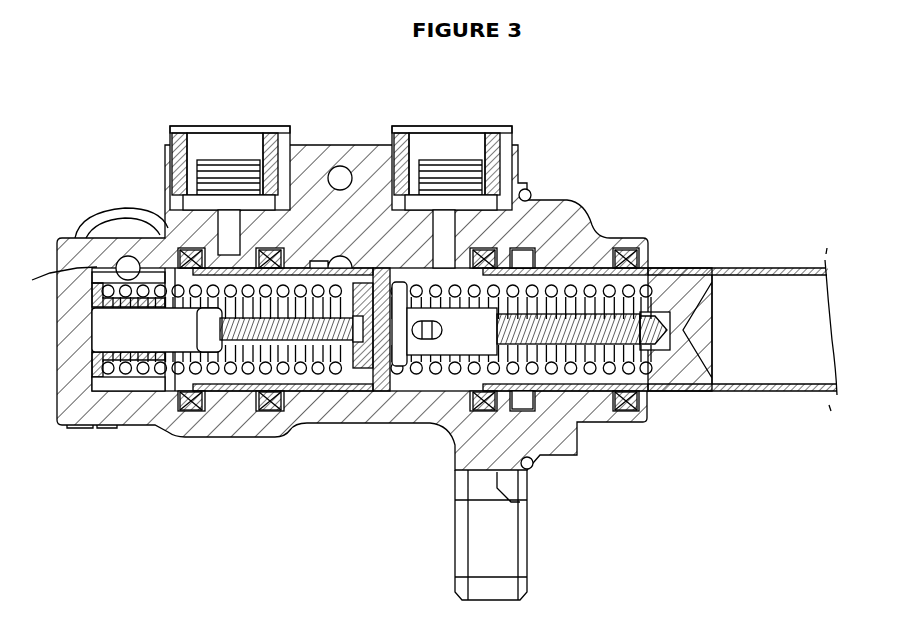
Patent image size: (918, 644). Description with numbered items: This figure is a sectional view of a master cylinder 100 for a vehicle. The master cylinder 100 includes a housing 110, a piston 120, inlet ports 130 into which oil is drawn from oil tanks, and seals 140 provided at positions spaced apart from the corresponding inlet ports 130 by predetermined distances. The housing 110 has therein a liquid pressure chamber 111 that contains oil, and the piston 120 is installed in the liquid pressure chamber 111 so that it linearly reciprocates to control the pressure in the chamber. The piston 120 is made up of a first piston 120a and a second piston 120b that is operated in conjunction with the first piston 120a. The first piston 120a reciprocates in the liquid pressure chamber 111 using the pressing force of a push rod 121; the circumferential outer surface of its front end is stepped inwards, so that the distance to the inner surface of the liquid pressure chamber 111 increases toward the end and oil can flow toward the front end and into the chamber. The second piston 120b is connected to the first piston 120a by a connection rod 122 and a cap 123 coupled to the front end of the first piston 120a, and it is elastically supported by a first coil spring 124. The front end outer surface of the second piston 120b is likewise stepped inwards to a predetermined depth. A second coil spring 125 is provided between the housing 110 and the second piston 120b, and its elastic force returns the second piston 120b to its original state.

The master cylinder 100 is at (425, 325).
The housing 110 is at (573, 233).
The liquid pressure chamber 111 is at (140, 383).
The piston 120 is at (379, 397).
The first piston 120a is at (500, 398).
The second piston 120b is at (353, 408).
The push rod 121 is at (759, 290).
The connection rod 122 is at (578, 345).
The cap 123 is at (534, 400).
The first coil spring 124 is at (643, 412).
The second coil spring 125 is at (291, 378).
The inlet port 130 is at (522, 243).
The seal 140 is at (488, 243).